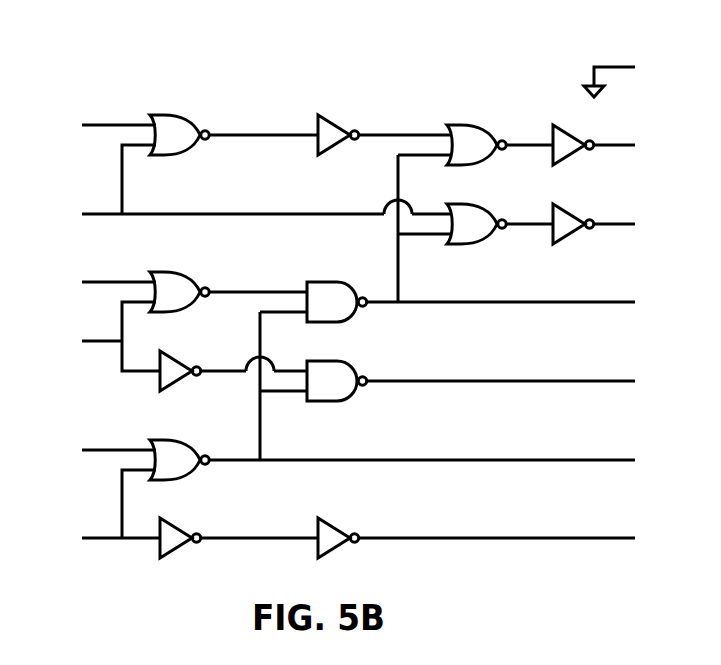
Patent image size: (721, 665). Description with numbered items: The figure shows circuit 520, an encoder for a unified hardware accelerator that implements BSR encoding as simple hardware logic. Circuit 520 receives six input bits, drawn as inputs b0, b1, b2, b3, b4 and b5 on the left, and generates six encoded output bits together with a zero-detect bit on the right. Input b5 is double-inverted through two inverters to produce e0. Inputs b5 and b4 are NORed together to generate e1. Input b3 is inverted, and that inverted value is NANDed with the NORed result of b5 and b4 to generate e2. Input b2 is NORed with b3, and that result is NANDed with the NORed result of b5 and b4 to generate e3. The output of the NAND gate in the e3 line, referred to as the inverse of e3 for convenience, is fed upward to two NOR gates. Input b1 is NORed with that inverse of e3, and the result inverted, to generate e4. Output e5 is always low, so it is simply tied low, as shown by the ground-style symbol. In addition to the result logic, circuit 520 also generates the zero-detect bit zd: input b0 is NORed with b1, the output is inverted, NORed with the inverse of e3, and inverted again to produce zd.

The circuit 520 is at (60, 38).
The input bit b[0] b0 is at (102, 125).
The input bit b[1] b1 is at (250, 185).
The input bit b[2] b2 is at (102, 282).
The input bit b[3] b3 is at (104, 336).
The input bit b[4] b4 is at (102, 450).
The input bit b[5] b5 is at (104, 510).
The encoded output bit e[5] e5 is at (625, 76).
The zero-detect bit zd is at (629, 145).
The encoded output bit e[4] e4 is at (630, 224).
The encoded output bit e[3] e3 is at (516, 234).
The encoded output bit e[2] e2 is at (516, 381).
The encoded output bit e[1] e1 is at (437, 392).
The encoded output bit e[0] e0 is at (512, 538).